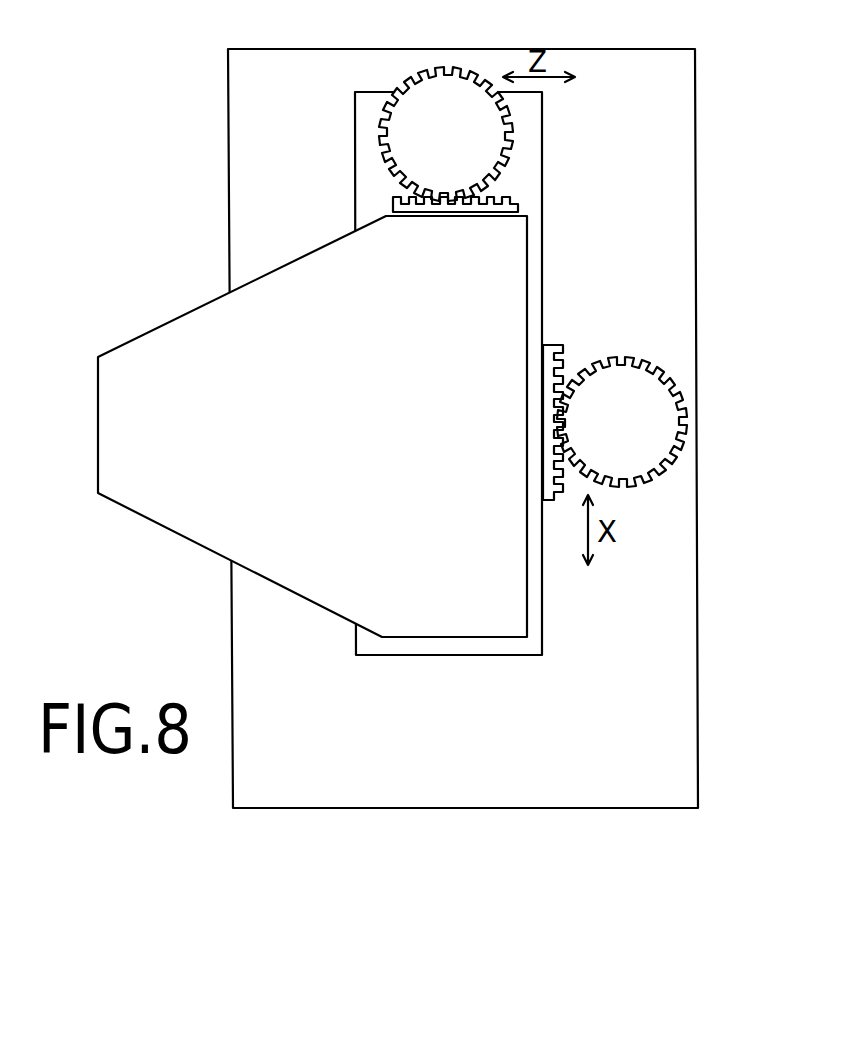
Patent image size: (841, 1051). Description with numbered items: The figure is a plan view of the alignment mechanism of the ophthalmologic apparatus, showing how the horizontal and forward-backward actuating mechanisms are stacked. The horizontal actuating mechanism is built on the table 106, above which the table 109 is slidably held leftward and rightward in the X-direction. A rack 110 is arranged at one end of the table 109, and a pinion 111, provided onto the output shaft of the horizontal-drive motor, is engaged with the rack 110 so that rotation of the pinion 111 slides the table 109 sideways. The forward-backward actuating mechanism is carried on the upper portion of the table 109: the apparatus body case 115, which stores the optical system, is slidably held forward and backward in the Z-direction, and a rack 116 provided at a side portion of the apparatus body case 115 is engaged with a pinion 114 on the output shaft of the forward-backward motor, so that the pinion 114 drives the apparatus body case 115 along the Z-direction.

The table 106 is at (685, 228).
The table 109 is at (522, 647).
The rack 110 is at (553, 345).
The pinion 111 is at (645, 383).
The pinion 114 is at (427, 102).
The apparatus body case 115 is at (443, 637).
The rack 116 is at (503, 197).